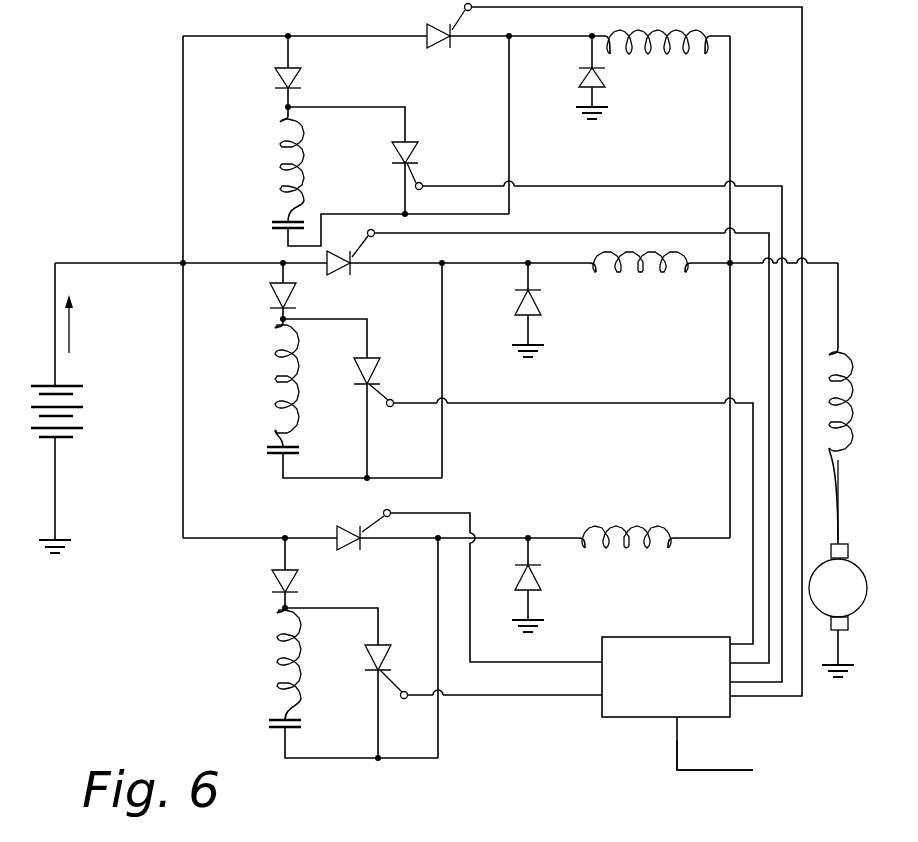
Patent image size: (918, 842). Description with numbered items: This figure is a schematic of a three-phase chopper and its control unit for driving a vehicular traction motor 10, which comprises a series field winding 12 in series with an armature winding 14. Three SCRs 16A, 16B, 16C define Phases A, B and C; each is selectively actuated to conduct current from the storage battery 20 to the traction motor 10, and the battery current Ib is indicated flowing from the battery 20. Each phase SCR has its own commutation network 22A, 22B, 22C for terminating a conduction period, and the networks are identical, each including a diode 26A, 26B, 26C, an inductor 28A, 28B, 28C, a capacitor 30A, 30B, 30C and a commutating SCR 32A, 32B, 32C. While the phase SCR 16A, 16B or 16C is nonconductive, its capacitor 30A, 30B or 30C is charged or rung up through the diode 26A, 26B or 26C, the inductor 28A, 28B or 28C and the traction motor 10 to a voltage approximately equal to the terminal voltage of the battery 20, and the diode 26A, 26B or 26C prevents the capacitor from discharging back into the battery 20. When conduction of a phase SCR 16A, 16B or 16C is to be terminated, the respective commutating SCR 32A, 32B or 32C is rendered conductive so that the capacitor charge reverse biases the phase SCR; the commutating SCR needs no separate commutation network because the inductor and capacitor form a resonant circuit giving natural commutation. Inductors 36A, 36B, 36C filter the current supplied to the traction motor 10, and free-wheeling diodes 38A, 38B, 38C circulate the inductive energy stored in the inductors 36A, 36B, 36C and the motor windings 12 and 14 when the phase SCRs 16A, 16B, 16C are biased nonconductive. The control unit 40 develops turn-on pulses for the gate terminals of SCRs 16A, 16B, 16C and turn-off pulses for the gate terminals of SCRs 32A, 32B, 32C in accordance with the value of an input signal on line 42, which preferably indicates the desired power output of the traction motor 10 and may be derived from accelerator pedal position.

The vehicular traction motor 10 is at (856, 505).
The series field winding 12 is at (851, 396).
The armature winding 14 is at (850, 583).
The SCR (Phase A) 16A is at (338, 272).
The SCR (Phase B) 16B is at (343, 553).
The SCR (Phase C) 16C is at (430, 47).
The storage battery 20 is at (76, 426).
The commutation network (Phase A) 22A is at (263, 402).
The commutation network (Phase B) 22B is at (248, 677).
The commutation network (Phase C) 22C is at (258, 153).
The diode (Phase A) 26A is at (270, 292).
The diode (Phase B) 26B is at (272, 580).
The diode (Phase C) 26C is at (276, 78).
The inductor (Phase A) 28A is at (272, 362).
The inductor (Phase B) 28B is at (274, 652).
The inductor (Phase C) 28C is at (303, 160).
The capacitor (Phase A) 30A is at (275, 457).
The capacitor (Phase B) 30B is at (298, 722).
The capacitor (Phase C) 30C is at (273, 222).
The commutating SCR (Phase A) 32A is at (394, 367).
The commutating SCR (Phase B) 32B is at (385, 655).
The commutating SCR (Phase C) 32C is at (412, 150).
The inductor (Phase A filter) 36A is at (650, 272).
The inductor (Phase B filter) 36B is at (616, 527).
The inductor (Phase C filter) 36C is at (650, 54).
The free-wheeling diode (Phase A) 38A is at (540, 305).
The free-wheeling diode (Phase B) 38B is at (540, 582).
The free-wheeling diode (Phase C) 38C is at (582, 78).
The control unit 40 is at (707, 637).
The input signal line 42 is at (713, 770).
The battery current Ib is at (85, 324).